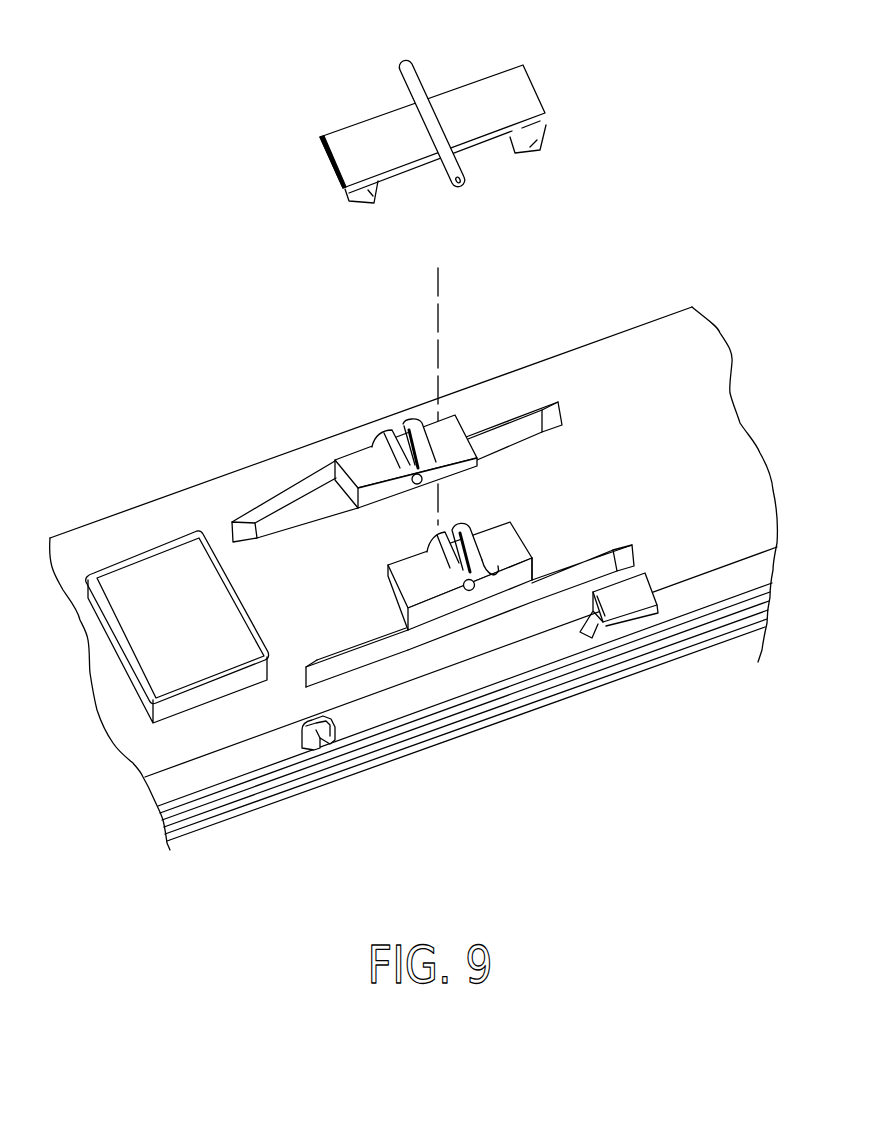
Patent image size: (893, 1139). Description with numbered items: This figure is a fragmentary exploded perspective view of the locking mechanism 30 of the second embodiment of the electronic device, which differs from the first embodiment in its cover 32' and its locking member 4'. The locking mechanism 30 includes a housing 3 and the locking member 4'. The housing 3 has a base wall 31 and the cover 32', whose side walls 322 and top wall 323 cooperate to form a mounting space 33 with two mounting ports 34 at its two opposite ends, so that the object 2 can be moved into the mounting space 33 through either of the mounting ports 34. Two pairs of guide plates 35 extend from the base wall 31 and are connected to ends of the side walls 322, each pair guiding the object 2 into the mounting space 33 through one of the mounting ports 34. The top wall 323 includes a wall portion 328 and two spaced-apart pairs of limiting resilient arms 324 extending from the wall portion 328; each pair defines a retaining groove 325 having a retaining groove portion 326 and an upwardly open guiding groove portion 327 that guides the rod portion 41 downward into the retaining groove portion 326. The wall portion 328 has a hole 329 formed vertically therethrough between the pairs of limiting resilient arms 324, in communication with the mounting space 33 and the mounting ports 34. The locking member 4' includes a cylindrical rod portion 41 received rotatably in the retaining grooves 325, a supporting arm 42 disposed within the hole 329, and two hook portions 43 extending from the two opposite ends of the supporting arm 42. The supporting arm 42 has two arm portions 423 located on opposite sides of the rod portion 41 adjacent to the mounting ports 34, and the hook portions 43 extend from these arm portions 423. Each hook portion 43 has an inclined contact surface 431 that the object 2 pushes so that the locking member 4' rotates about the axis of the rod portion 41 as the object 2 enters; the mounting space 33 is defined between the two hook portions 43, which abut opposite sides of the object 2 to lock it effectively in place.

The object 2 is at (153, 577).
The housing 3 is at (411, 542).
The locking member 4' is at (339, 288).
The locking mechanism 30 is at (458, 132).
The base wall 31 is at (642, 345).
The cover 32' is at (563, 663).
The mounting space 33 is at (382, 588).
The mounting port 34 is at (491, 477).
The guide plate 35 is at (263, 514).
The rod portion 41 is at (416, 86).
The supporting arm 42 is at (446, 132).
The hook portion 43 is at (446, 189).
The side wall 322 is at (458, 617).
The top wall 323 is at (536, 556).
The limiting resilient arm 324 is at (559, 667).
The retaining groove 325 is at (474, 599).
The retaining groove portion 326 is at (466, 590).
The guiding groove portion 327 is at (483, 537).
The wall portion 328 is at (487, 568).
The hole 329 is at (387, 508).
The arm portion 423 is at (385, 140).
The inclined contact surface 431 is at (357, 197).